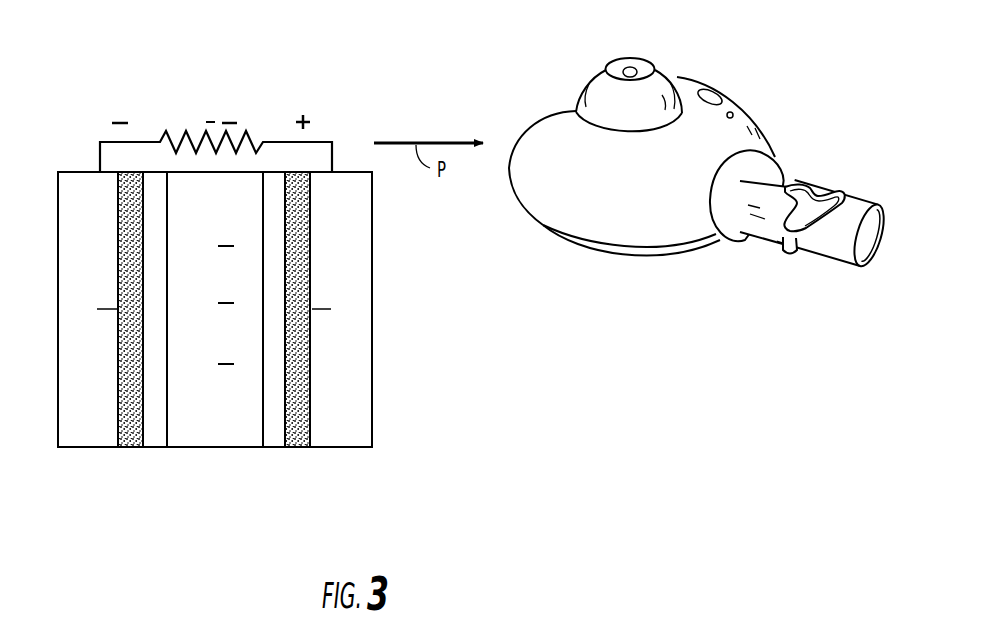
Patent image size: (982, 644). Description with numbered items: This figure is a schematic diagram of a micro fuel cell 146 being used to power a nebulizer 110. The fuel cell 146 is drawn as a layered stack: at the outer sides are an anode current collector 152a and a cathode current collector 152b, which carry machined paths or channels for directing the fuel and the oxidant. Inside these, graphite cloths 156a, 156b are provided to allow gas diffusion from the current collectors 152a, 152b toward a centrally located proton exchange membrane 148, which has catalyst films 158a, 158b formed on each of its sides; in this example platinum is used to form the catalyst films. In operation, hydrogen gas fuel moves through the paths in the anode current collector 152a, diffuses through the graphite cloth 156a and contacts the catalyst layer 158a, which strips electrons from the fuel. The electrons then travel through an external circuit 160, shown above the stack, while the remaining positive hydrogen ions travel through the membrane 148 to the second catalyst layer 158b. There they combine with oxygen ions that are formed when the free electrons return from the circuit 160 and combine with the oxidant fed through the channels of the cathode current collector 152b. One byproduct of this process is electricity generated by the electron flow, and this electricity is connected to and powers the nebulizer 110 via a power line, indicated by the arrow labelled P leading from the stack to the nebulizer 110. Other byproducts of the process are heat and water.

The nebulizer 110 is at (745, 78).
The micro fuel cell 146 is at (422, 352).
The proton exchange membrane 148 is at (202, 449).
The anode current collector 152a is at (90, 449).
The cathode current collector 152b is at (343, 449).
The graphite cloth 156a is at (128, 449).
The graphite cloth 156b is at (297, 449).
The catalyst layer 158a is at (152, 449).
The second catalyst layer 158b is at (273, 449).
The external circuit 160 is at (99, 158).